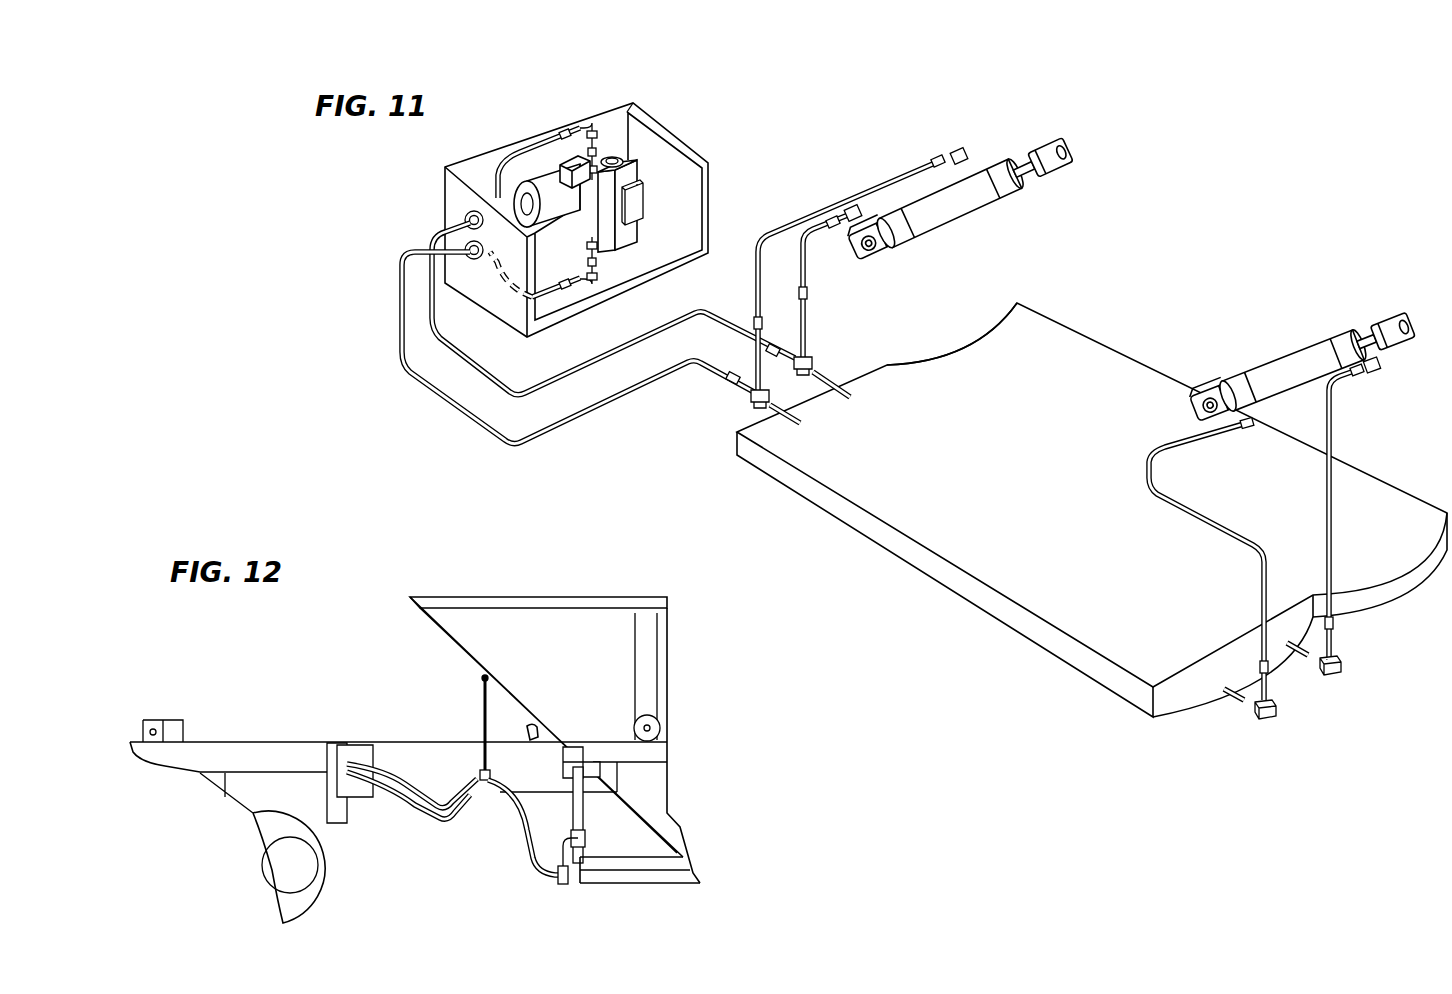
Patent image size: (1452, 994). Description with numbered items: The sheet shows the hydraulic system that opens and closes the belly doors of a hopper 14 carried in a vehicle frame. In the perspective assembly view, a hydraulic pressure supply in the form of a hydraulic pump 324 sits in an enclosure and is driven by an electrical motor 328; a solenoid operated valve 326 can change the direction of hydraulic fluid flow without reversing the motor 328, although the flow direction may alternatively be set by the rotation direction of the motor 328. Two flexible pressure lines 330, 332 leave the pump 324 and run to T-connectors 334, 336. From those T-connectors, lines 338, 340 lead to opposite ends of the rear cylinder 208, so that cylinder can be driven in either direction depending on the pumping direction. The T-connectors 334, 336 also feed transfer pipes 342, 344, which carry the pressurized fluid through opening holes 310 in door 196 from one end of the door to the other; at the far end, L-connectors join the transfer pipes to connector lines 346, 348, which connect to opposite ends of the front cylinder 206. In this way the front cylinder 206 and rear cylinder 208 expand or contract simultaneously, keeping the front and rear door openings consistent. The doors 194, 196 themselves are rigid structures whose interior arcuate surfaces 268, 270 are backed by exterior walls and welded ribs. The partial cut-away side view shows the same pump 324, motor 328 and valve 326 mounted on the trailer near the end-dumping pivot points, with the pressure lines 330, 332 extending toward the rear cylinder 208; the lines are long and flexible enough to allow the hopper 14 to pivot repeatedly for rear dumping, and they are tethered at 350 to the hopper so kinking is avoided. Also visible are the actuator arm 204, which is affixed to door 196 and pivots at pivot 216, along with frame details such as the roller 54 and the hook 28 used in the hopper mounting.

In FIG. 12, the hopper 14 is at (422, 598).
In FIG. 12, the hook 28 is at (528, 730).
In FIG. 12, the roller 54 is at (662, 728).
In FIG. 11, the door 194 is at (1367, 485).
In FIG. 11, the door 196 is at (1037, 648).
In FIG. 12, the door 196 is at (617, 882).
In FIG. 12, the actuator arm 204 is at (545, 812).
In FIG. 11, the front cylinder 206 is at (1287, 362).
In FIG. 11, the rear cylinder 208 is at (958, 212).
In FIG. 12, the rear cylinder 208 is at (587, 833).
In FIG. 12, the pivot 216 is at (617, 777).
In FIG. 11, the interior arcuate surface 268 is at (1087, 352).
In FIG. 11, the interior arcuate surface 270 is at (940, 562).
In FIG. 11, the opening holes 310 is at (1233, 683).
In FIG. 11, the hydraulic pump 324 is at (630, 147).
In FIG. 12, the hydraulic pump 324 is at (360, 757).
In FIG. 11, the solenoid operated valve 326 is at (627, 243).
In FIG. 11, the electrical motor 328 is at (563, 215).
In FIG. 11, the pressure line 330 is at (483, 376).
In FIG. 12, the pressure line 330 is at (367, 797).
In FIG. 11, the pressure line 332 is at (470, 414).
In FIG. 12, the pressure line 332 is at (367, 767).
In FIG. 11, the T-connector 334 is at (812, 362).
In FIG. 11, the T-connector 336 is at (757, 404).
In FIG. 11, the line 338 is at (843, 194).
In FIG. 11, the line 340 is at (806, 258).
In FIG. 11, the transfer pipe 342 is at (843, 395).
In FIG. 11, the transfer pipe 344 is at (787, 417).
In FIG. 11, the connector line 346 is at (1327, 497).
In FIG. 11, the connector line 348 is at (1263, 617).
In FIG. 12, the tether 350 is at (480, 723).